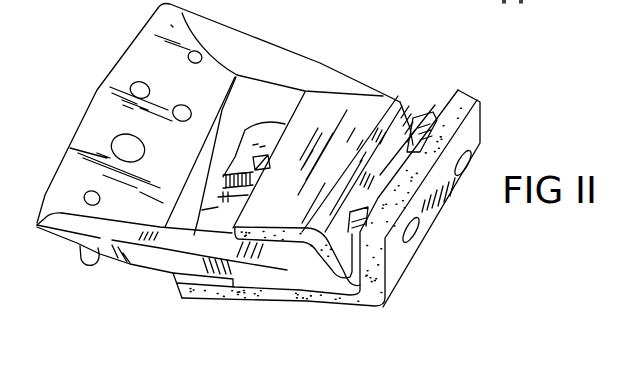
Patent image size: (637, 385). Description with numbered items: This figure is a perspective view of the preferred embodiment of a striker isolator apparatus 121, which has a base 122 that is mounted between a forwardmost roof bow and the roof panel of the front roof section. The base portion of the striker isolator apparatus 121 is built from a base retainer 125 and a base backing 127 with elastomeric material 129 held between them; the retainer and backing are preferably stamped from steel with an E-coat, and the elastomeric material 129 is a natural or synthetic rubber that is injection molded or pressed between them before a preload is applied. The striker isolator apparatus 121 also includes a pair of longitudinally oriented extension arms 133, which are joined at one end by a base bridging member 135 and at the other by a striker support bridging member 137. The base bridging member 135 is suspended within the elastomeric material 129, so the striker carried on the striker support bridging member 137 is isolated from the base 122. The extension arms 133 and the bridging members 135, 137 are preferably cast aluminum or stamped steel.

The striker isolator apparatus 121 is at (514, 148).
The base 122 is at (277, 322).
The base retainer 125 is at (384, 103).
The base backing 127 is at (416, 228).
The elastomeric material 129 is at (310, 290).
The extension arms 133 is at (299, 64).
The base bridging member 135 is at (287, 248).
The striker support bridging member 137 is at (133, 66).